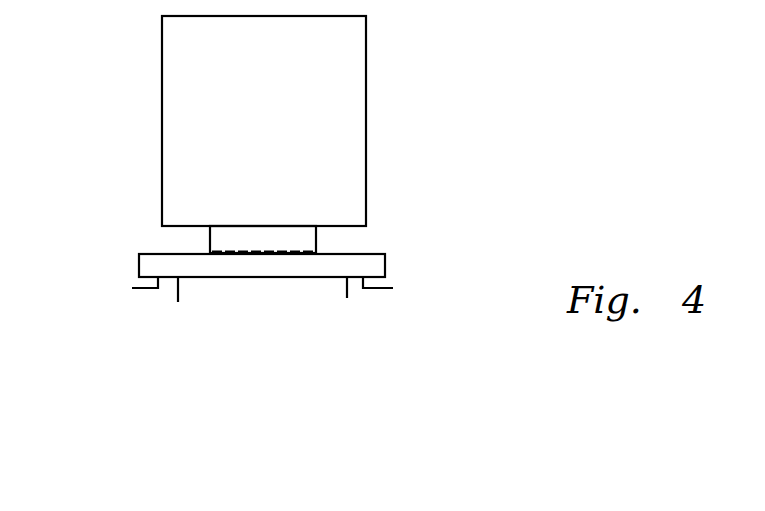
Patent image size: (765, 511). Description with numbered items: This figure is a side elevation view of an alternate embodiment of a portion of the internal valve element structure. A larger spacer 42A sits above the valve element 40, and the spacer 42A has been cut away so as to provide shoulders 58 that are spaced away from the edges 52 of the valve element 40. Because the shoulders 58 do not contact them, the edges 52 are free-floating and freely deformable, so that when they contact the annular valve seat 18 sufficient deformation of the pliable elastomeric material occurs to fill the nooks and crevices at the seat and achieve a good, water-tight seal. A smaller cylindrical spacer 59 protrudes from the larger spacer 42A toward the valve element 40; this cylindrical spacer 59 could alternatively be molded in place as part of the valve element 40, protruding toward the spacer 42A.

The spacer 42A is at (300, 143).
The cylindrical spacer 59 is at (210, 242).
The shoulders 58 is at (348, 227).
The edges 52 is at (385, 265).
The valve element 40 is at (139, 266).
The annular valve seat 18 is at (355, 283).